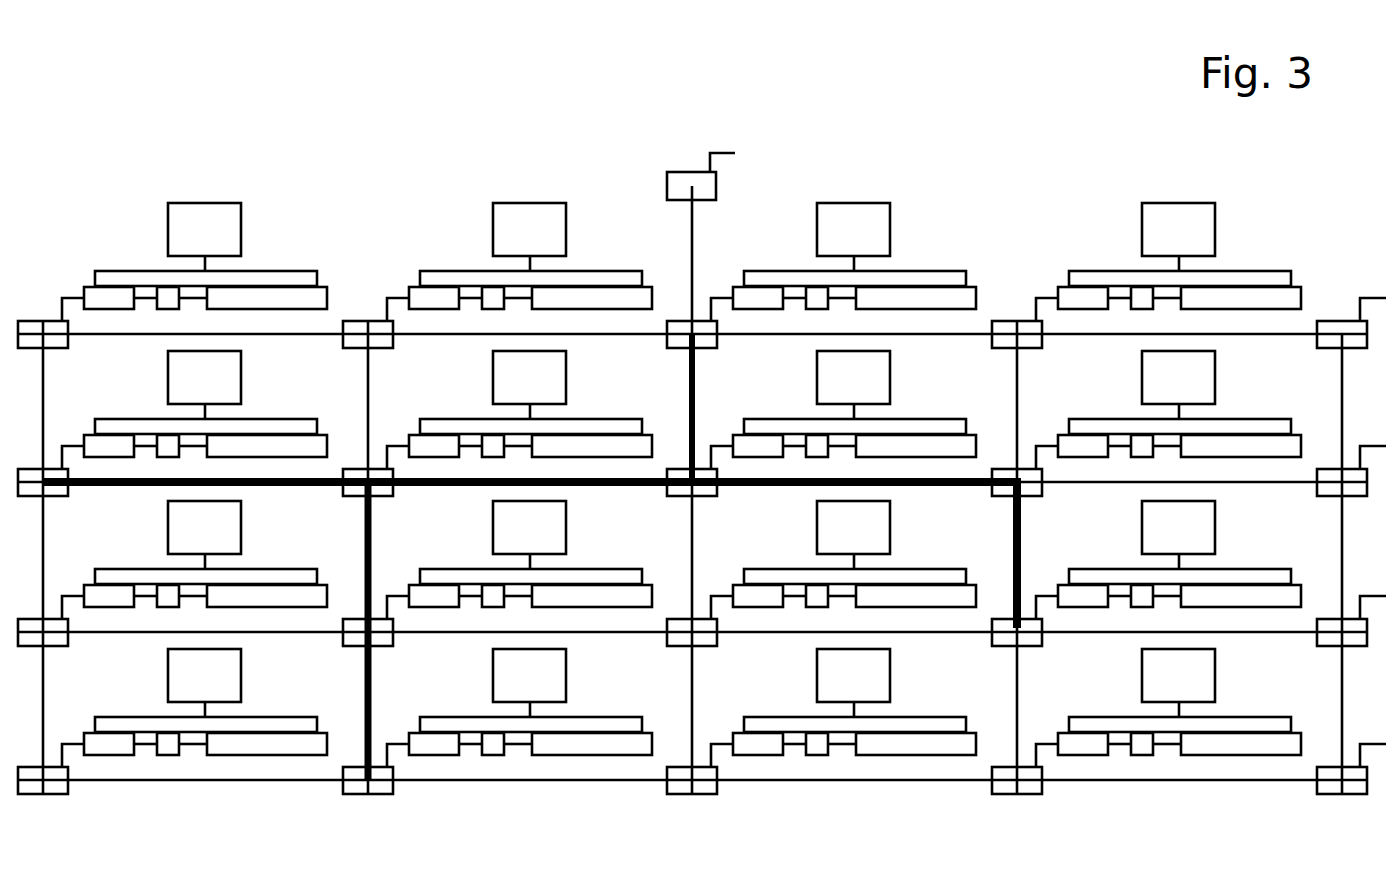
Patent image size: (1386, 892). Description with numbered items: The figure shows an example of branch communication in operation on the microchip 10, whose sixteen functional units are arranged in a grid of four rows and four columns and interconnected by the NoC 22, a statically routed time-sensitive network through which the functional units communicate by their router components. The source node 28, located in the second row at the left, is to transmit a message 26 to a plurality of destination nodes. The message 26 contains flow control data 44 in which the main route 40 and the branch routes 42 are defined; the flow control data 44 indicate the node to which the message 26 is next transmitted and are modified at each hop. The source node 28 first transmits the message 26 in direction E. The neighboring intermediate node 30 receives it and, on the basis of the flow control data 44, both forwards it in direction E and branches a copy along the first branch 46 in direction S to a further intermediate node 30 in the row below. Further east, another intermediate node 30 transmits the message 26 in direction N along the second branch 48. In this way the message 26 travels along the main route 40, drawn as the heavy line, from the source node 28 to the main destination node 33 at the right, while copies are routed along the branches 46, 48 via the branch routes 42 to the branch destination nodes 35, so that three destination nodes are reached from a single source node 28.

The microchip 10 is at (284, 74).
The NoC 22 is at (512, 128).
The message 26 is at (328, 476).
The source node 28 is at (54, 470).
The intermediate node 30 is at (378, 468).
The main destination node 33 is at (1000, 636).
The branch destination node 35 is at (680, 318).
The main route 40 is at (610, 488).
The branch route 42 is at (690, 375).
The flow control data 44 is at (530, 555).
The first branch 46 is at (365, 533).
The second branch 48 is at (690, 402).